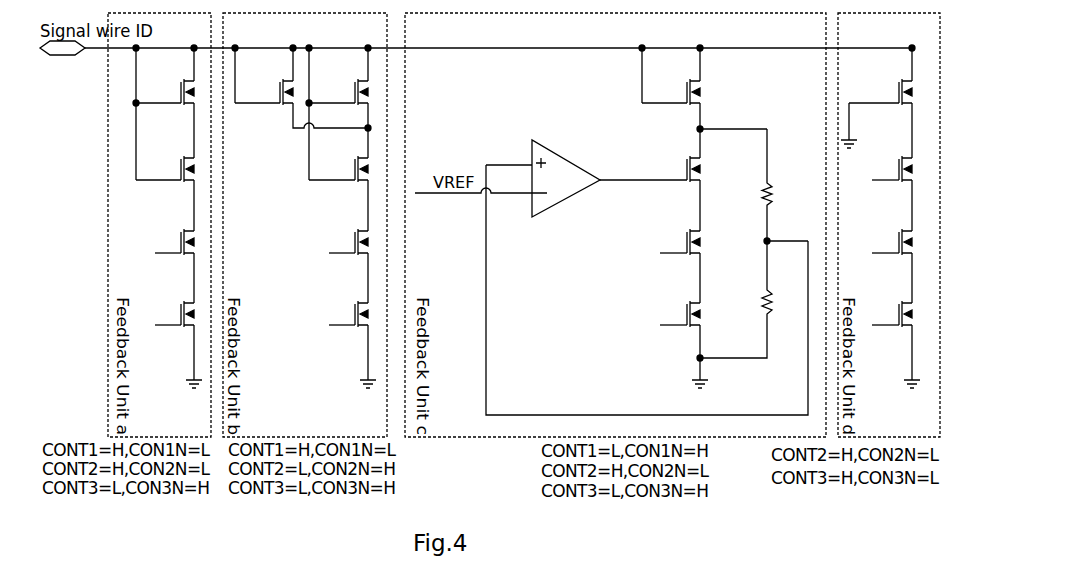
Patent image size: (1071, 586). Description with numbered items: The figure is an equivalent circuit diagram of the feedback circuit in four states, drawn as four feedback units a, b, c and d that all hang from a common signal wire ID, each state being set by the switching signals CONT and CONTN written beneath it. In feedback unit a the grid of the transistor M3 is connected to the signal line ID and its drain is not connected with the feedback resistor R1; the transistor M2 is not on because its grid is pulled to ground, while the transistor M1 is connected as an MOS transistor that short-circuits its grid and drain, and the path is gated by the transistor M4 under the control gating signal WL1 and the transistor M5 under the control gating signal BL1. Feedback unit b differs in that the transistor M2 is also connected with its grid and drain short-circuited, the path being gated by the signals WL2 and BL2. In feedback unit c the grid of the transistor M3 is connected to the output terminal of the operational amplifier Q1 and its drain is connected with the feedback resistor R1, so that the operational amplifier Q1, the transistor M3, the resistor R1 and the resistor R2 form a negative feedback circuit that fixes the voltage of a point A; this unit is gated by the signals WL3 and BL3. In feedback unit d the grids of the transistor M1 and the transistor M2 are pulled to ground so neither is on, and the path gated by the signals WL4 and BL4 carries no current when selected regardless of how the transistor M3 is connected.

The transistor M1 is at (524, 104).
The transistor M2 is at (301, 104).
The transistor M3 is at (524, 182).
The transistor M4 is at (536, 252).
The transistor M5 is at (536, 325).
The feedback resistor R1 is at (771, 185).
The resistor R2 is at (736, 299).
The operational amplifier Q1 is at (611, 277).
The point A is at (733, 144).
The control gating signal WL1 is at (159, 243).
The control gating signal WL2 is at (333, 243).
The control gating signal WL3 is at (664, 243).
The control gating signal WL4 is at (877, 243).
The control gating signal BL1 is at (159, 313).
The control gating signal BL2 is at (333, 313).
The control gating signal BL3 is at (667, 313).
The control gating signal BL4 is at (880, 313).